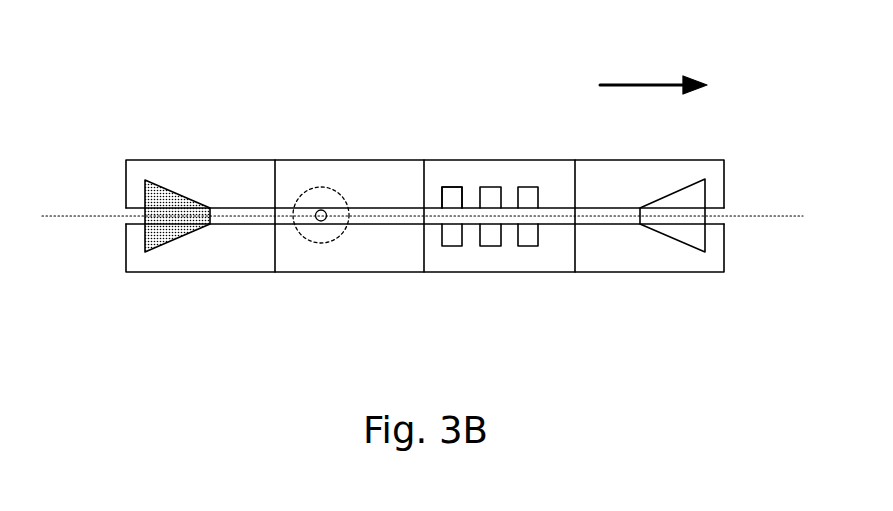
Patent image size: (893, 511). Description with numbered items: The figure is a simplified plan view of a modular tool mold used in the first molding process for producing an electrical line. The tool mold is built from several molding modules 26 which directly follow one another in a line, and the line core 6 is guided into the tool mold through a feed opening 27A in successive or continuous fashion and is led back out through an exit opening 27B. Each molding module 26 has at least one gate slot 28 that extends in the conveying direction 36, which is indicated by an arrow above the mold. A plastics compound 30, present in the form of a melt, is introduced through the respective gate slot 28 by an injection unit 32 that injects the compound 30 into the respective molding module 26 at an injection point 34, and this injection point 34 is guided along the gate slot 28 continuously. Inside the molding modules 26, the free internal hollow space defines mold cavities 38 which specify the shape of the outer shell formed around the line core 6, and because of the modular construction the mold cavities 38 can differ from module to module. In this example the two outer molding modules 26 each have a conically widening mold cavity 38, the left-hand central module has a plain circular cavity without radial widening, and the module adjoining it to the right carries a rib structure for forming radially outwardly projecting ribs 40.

The line core 6 is at (100, 217).
The molding module 26 is at (222, 272).
The feed opening 27A is at (110, 196).
The exit opening 27B is at (743, 197).
The gate slot 28 is at (377, 207).
The plastics compound 30 is at (225, 207).
The injection unit 32 is at (307, 189).
The injection point 34 is at (322, 209).
The conveying direction 36 is at (633, 85).
The mold cavity 38 is at (450, 246).
The rib 40 is at (453, 199).